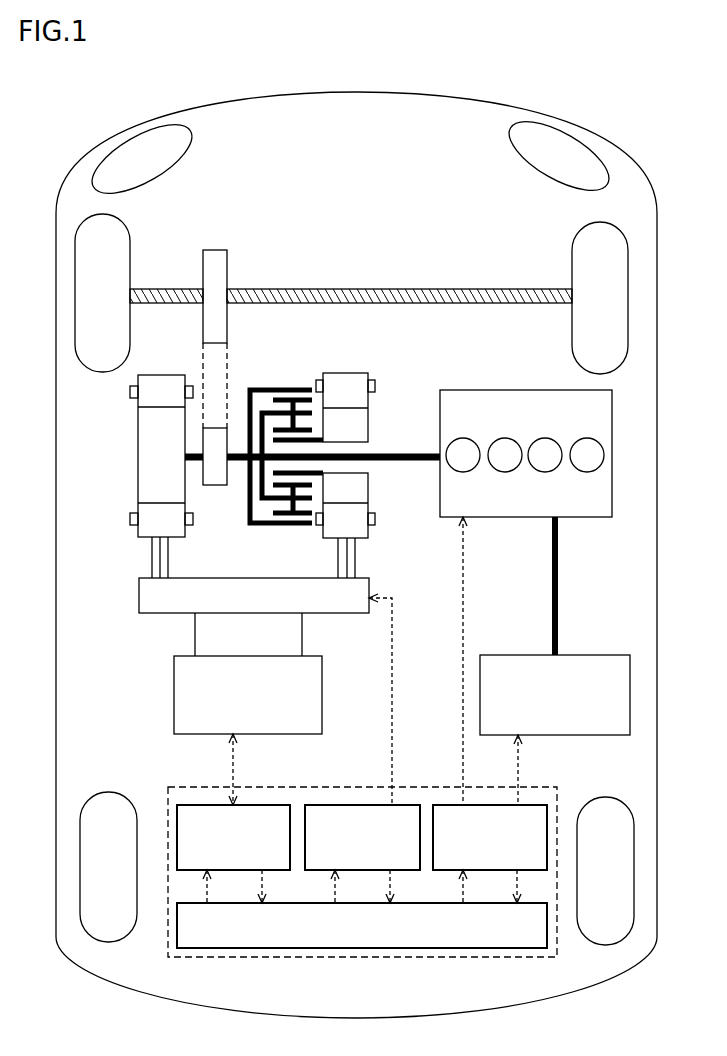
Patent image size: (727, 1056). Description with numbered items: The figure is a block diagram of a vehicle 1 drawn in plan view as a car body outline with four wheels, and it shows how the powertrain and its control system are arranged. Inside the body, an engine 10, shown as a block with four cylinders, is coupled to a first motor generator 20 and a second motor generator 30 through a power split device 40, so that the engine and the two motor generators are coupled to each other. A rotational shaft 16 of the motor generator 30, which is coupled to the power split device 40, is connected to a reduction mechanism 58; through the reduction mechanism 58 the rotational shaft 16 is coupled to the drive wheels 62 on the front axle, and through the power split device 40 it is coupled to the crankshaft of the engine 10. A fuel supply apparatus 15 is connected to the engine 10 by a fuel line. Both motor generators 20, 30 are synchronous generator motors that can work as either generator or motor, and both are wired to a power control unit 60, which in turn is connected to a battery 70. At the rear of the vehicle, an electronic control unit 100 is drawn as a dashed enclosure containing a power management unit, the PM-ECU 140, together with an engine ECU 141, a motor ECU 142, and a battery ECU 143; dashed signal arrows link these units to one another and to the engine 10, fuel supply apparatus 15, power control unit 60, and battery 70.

The vehicle 1 is at (348, 63).
The engine 10 is at (466, 390).
The fuel supply apparatus 15 is at (610, 655).
The rotational shaft 16 is at (238, 462).
The motor generator 20 is at (345, 373).
The motor generator 30 is at (163, 375).
The power split device 40 is at (289, 376).
The reduction mechanism 58 is at (216, 250).
The power control unit (PCU) 60 is at (139, 597).
The drive wheels 62 is at (586, 222).
The battery 70 is at (174, 696).
The electronic control unit 100 is at (445, 958).
The power management electronic control unit (PM-ECU) 140 is at (236, 948).
The engine electronic control unit (engine ECU) 141 is at (535, 802).
The motor electronic control unit (motor ECU) 142 is at (323, 805).
The battery electronic control unit (battery ECU) 143 is at (195, 805).